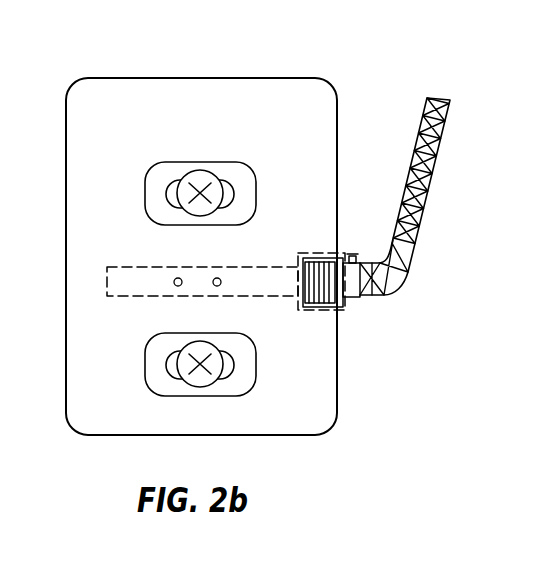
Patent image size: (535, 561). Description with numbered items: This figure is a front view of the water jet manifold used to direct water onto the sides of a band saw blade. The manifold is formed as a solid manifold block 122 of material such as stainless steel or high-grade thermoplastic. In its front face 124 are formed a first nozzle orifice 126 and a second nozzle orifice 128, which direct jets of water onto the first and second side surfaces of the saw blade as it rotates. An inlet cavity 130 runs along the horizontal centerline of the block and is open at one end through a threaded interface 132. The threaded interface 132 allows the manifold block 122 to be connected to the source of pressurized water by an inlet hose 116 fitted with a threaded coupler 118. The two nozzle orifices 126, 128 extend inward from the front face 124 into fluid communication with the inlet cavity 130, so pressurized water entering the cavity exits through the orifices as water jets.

The inlet hose 116 is at (438, 155).
The threaded coupler 118 is at (354, 256).
The manifold block 122 is at (145, 78).
The front face 124 is at (172, 132).
The first nozzle orifice 126 is at (217, 274).
The second nozzle orifice 128 is at (174, 282).
The inlet cavity 130 is at (260, 287).
The threaded interface 132 is at (320, 310).